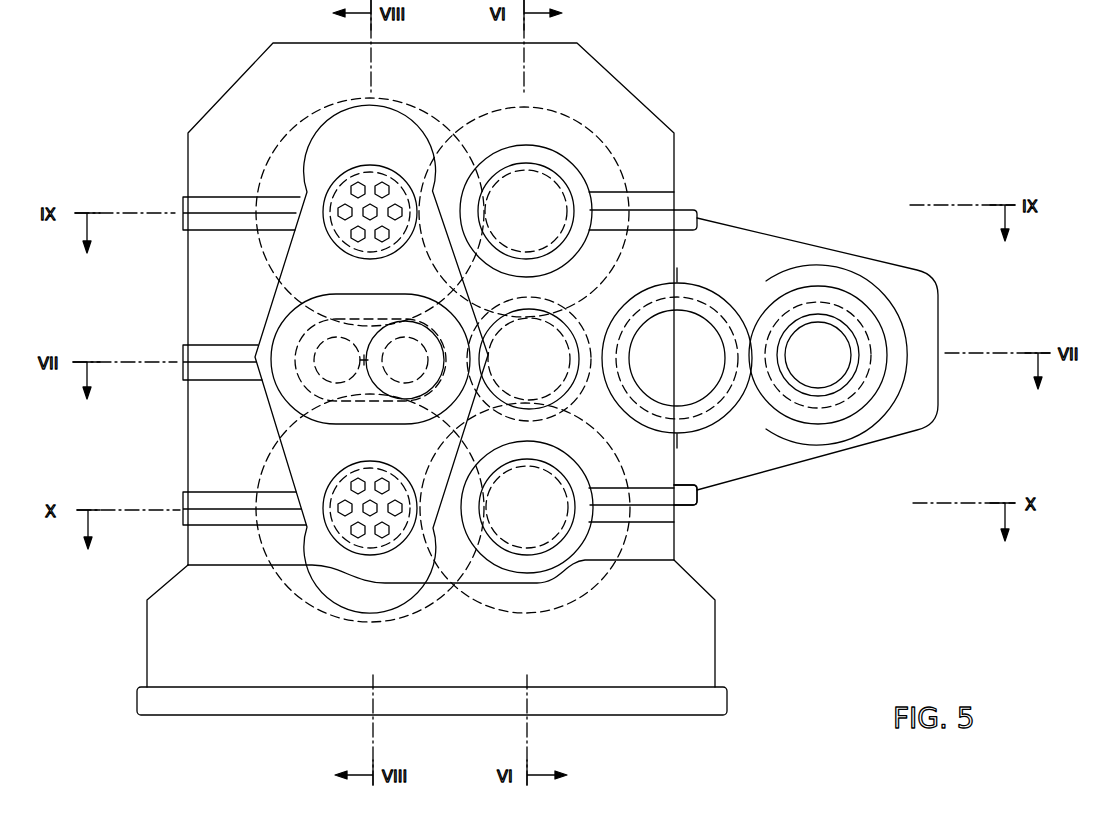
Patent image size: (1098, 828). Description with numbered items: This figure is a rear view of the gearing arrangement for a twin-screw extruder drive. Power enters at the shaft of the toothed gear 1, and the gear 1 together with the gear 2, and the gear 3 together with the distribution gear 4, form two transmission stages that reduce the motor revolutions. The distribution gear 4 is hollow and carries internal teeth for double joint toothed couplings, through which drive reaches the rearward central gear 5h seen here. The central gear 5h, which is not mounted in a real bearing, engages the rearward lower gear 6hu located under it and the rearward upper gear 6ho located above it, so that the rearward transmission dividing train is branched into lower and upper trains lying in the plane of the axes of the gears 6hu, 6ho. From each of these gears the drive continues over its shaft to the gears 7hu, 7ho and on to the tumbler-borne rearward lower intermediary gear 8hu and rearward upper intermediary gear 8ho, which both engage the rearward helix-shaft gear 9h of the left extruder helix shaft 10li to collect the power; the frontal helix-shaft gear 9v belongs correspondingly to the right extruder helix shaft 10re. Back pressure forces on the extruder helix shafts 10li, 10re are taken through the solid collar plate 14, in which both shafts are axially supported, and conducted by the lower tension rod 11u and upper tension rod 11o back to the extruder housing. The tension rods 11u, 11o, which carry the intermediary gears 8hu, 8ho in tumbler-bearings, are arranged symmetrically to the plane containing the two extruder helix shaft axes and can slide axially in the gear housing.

The toothed gear 1 is at (815, 303).
The gear 2 is at (713, 275).
The gear 3 is at (737, 430).
The distribution gear 4 is at (705, 490).
The rearward central gear 5h is at (570, 360).
The rearward upper gear 6ho is at (603, 140).
The rearward lower gear 6hu is at (600, 582).
The rearward upper gear 7ho is at (563, 195).
The rearward lower gear 7hu is at (575, 540).
The rearward upper intermediary gear 8ho is at (273, 143).
The rearward lower intermediary gear 8hu is at (293, 595).
The frontal helix-shaft gear 9v is at (300, 322).
The rearward helix-shaft gear 9h is at (362, 362).
The left extruder helix shaft 10li is at (350, 371).
The right extruder helix shaft 10re is at (380, 356).
The upper tension rod 11o is at (330, 187).
The lower tension rod 11u is at (338, 540).
The collar plate 14 is at (335, 450).